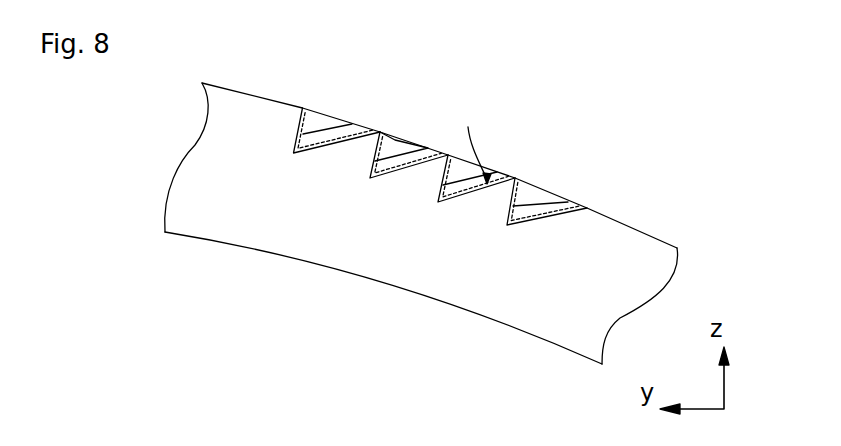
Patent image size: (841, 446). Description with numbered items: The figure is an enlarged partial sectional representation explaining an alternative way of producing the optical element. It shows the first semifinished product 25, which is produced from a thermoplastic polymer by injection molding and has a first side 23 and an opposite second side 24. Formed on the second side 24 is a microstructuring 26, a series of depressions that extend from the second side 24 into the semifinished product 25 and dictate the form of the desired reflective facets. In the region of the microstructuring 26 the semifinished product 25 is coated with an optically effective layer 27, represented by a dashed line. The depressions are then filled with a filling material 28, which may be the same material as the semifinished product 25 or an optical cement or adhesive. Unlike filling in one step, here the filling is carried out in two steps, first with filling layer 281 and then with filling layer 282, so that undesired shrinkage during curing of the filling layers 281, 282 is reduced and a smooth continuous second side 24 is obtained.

The first side 23 is at (242, 247).
The second side 24 is at (657, 238).
The first semifinished product 25 is at (190, 140).
The microstructuring 26 is at (471, 141).
The optically effective layer 27 is at (570, 210).
The filling material 28 is at (405, 132).
The first filling layer 281 is at (408, 157).
The second filling layer 282 is at (390, 142).